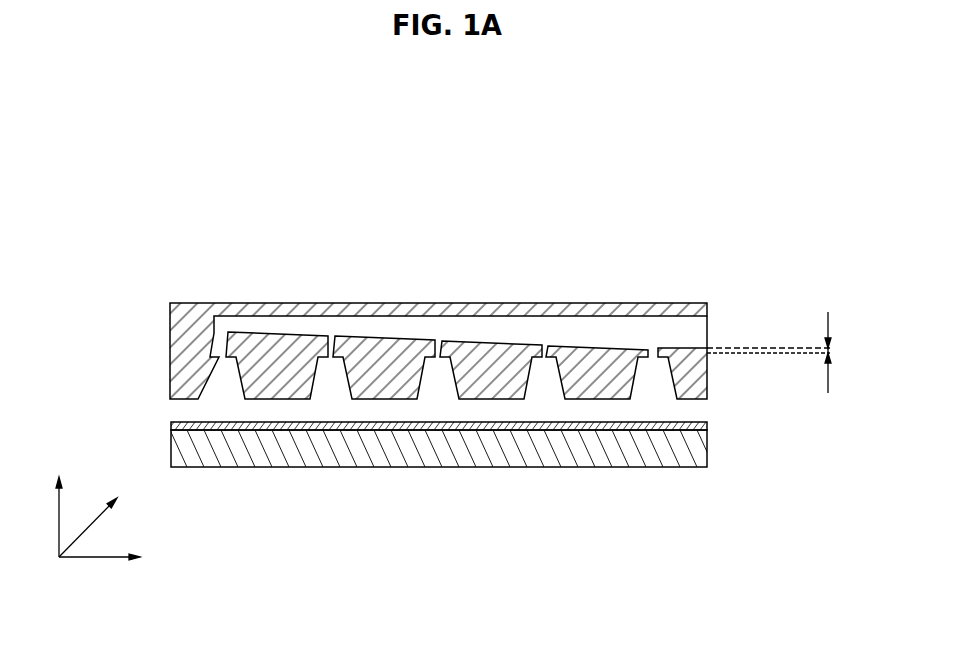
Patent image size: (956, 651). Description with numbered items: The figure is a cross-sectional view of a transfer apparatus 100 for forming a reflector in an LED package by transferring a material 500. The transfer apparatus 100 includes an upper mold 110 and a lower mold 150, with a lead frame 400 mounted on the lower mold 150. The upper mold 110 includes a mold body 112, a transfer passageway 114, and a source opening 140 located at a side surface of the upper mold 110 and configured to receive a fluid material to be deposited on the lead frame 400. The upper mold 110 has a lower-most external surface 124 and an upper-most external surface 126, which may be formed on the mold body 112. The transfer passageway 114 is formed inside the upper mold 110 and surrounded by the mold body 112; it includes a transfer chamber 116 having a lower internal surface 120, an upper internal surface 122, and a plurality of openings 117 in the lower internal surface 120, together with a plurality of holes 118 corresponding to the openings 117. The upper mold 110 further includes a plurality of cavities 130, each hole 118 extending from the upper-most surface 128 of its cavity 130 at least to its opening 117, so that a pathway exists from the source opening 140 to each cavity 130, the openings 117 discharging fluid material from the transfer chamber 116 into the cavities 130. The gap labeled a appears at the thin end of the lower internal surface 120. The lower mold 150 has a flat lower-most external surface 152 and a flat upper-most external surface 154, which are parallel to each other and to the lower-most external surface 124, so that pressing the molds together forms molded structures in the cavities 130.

The transfer apparatus 100 is at (448, 107).
The upper mold 110 is at (163, 303).
The mold body 112 is at (189, 308).
The transfer passageway 114 is at (372, 227).
The transfer chamber 116 is at (253, 322).
The openings 117 is at (328, 338).
The holes 118 is at (328, 348).
The lower internal surface 120 is at (397, 339).
The upper internal surface 122 is at (452, 314).
The lower-most external surface 124 is at (600, 405).
The upper-most external surface 126 is at (531, 308).
The upper-most surface of the cavity 128 is at (667, 362).
The cavities 130 is at (650, 373).
The source opening 140 is at (708, 333).
The material 500 is at (700, 324).
The gap distance a is at (776, 352).
The lead frame 400 is at (704, 422).
The lower mold 150 is at (707, 442).
The lower-most external surface 152 is at (485, 462).
The upper-most external surface 154 is at (447, 423).